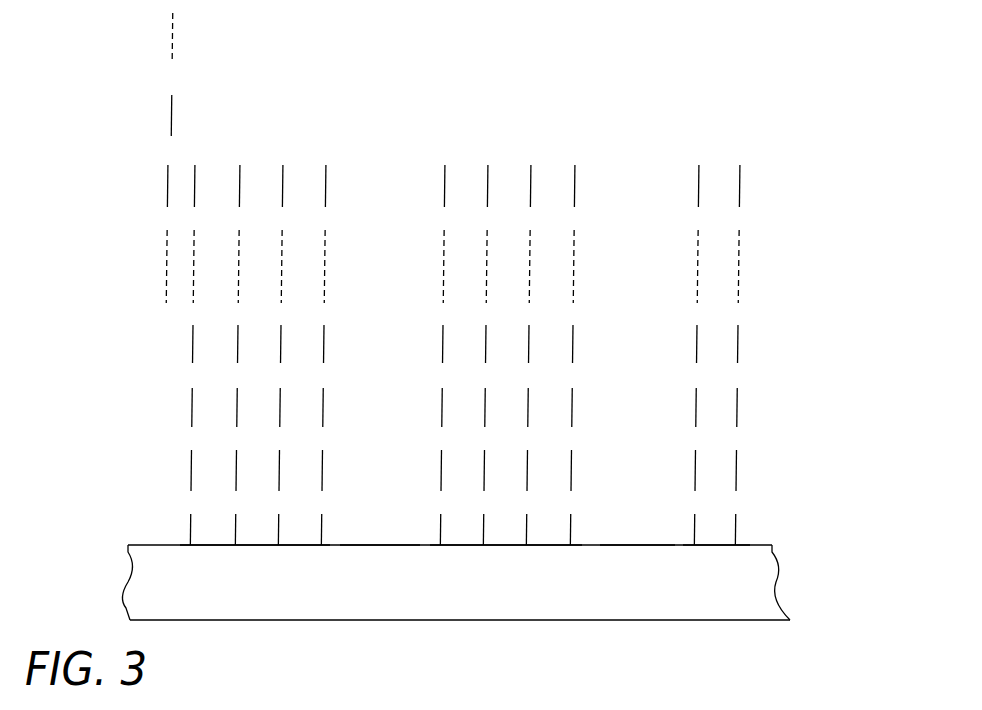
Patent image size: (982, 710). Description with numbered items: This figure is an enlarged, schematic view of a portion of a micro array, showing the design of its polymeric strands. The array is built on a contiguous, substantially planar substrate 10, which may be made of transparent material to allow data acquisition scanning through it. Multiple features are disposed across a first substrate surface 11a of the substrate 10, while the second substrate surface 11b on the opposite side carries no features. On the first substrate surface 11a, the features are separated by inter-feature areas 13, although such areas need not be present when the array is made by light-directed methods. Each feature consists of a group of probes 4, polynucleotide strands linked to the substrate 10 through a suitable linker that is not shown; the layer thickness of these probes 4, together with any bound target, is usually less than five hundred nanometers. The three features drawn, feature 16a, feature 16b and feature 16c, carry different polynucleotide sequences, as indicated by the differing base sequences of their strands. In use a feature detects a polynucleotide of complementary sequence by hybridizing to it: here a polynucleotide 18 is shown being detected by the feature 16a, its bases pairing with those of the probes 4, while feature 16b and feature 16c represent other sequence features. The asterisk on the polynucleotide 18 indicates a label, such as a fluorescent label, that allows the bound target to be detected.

The probes 4 is at (343, 132).
The substrate 10 is at (410, 612).
The first substrate surface 11a is at (155, 545).
The second substrate surface 11b is at (730, 620).
The inter-feature areas 13 is at (395, 545).
The feature 16a is at (328, 549).
The feature 16b is at (580, 549).
The feature 16c is at (749, 549).
The polynucleotide 18 is at (172, 112).